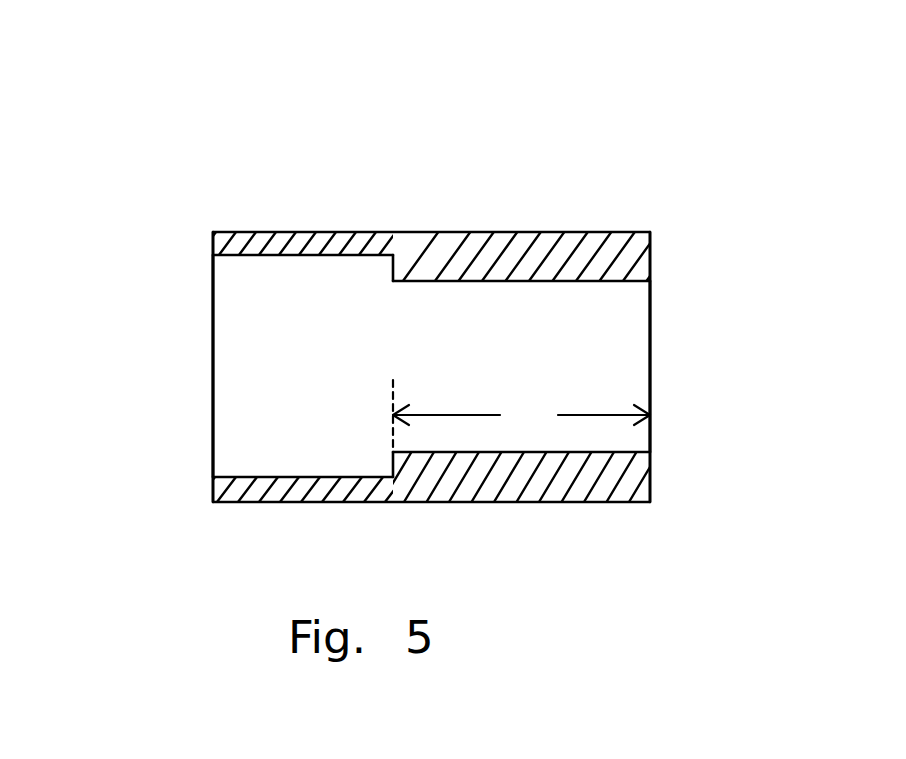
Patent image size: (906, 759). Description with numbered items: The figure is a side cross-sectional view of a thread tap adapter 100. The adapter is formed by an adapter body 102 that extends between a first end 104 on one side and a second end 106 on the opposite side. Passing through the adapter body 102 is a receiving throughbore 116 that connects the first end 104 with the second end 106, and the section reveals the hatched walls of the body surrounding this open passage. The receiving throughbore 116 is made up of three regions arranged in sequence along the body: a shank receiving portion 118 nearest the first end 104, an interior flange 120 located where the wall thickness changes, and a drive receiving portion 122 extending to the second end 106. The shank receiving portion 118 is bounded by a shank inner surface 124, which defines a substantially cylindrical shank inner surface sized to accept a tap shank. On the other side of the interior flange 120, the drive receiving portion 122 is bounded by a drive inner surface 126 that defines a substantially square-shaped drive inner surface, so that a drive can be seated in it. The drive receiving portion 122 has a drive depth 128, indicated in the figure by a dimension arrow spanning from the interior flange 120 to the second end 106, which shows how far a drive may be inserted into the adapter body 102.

The thread tap adapter 100 is at (527, 161).
The adapter body 102 is at (565, 231).
The first end 104 is at (213, 250).
The second end 106 is at (650, 267).
The receiving throughbore 116 is at (400, 348).
The shank receiving portion 118 is at (243, 352).
The interior flange 120 is at (393, 462).
The drive receiving portion 122 is at (618, 352).
The shank inner surface 124 is at (270, 477).
The drive inner surface 126 is at (600, 452).
The drive depth 128 is at (521, 416).